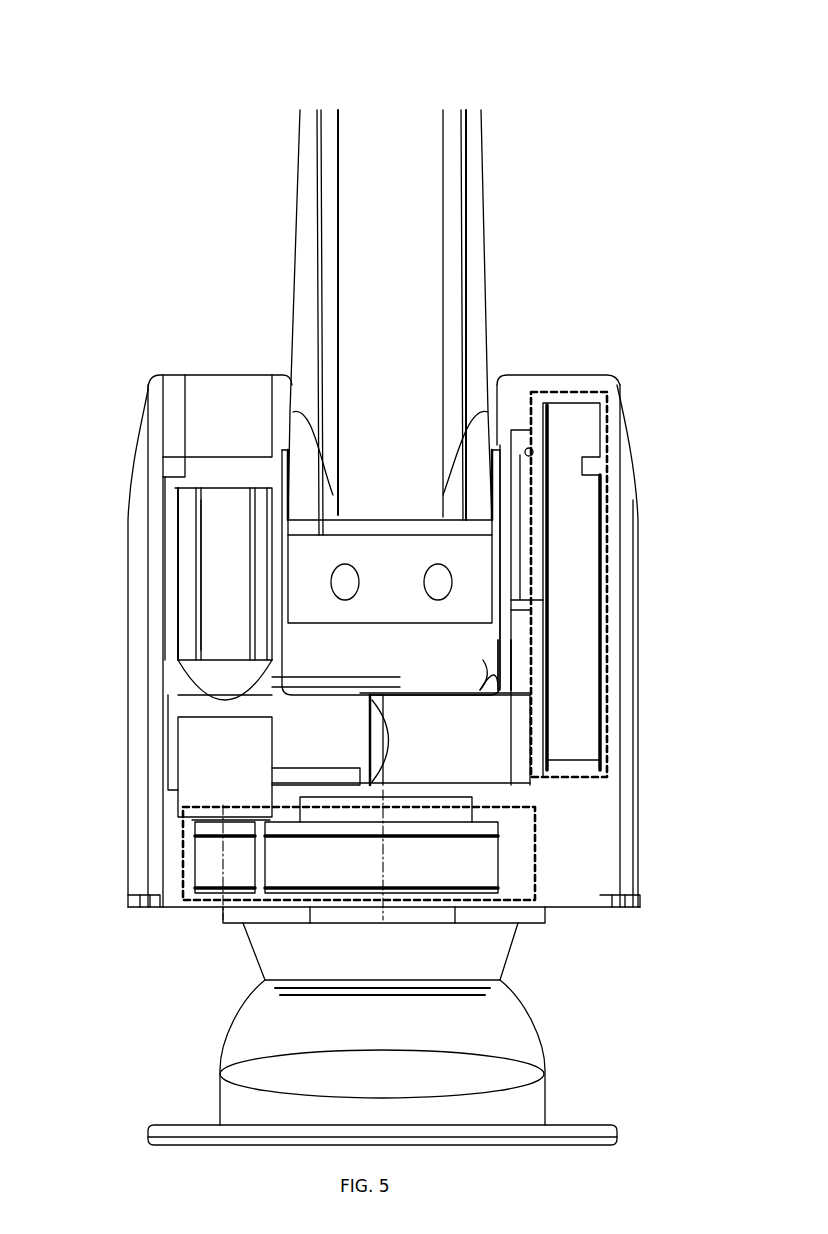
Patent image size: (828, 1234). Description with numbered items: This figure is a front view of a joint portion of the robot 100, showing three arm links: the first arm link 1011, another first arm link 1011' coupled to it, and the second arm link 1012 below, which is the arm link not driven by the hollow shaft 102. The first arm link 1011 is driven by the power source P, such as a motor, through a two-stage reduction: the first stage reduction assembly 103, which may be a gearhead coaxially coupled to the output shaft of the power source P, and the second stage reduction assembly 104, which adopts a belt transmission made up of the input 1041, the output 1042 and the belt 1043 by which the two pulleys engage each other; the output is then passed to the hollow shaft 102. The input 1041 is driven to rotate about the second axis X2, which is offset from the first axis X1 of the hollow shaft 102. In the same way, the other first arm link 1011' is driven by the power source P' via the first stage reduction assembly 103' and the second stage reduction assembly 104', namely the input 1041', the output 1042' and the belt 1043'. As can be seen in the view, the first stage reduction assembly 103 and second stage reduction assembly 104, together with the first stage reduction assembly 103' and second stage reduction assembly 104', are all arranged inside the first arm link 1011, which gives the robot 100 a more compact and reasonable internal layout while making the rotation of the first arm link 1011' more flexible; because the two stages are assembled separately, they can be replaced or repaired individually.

The robot 100 is at (403, 72).
The first arm link 1011' is at (352, 322).
The first arm link 1011 is at (344, 641).
The second arm link 1012 is at (245, 1043).
The hollow shaft 102 is at (430, 905).
The first stage reduction assembly 103 is at (354, 747).
The first stage reduction assembly 103' is at (445, 712).
The second stage reduction assembly 104 is at (366, 858).
The second stage reduction assembly 104' is at (598, 562).
The input 1041 is at (318, 921).
The input 1041' is at (645, 622).
The output 1042 is at (346, 792).
The output 1042' is at (529, 562).
The belt 1043 is at (395, 857).
The belt 1043' is at (619, 590).
The power source P is at (158, 575).
The power source P' is at (378, 714).
The first axis X1 is at (370, 868).
The second axis X2 is at (211, 852).